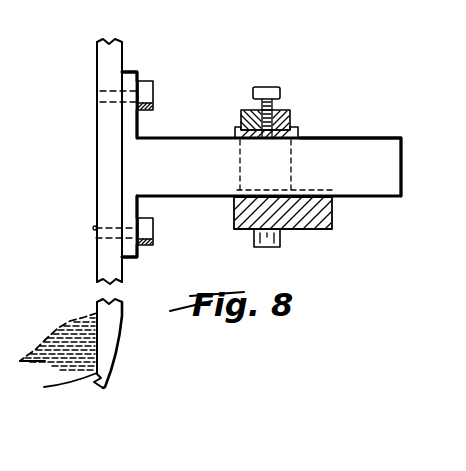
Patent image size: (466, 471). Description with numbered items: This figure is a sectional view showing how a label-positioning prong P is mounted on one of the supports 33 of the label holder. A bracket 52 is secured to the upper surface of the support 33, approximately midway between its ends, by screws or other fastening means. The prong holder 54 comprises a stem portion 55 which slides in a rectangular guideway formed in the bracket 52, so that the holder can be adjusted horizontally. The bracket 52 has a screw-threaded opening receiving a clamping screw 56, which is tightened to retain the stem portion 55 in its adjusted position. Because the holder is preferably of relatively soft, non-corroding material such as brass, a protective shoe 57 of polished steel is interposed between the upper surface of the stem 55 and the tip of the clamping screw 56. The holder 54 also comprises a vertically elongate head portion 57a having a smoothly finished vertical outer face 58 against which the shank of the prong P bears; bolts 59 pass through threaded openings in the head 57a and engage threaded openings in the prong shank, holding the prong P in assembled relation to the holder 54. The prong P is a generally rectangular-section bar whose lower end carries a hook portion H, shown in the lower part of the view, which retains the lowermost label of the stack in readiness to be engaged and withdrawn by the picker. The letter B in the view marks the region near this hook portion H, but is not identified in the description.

The label-positioning prong P is at (107, 68).
The prong holder 54 is at (213, 110).
The head portion 57a is at (132, 73).
The bolts 59 is at (153, 93).
The clamping screw 56 is at (268, 86).
The bracket 52 is at (285, 113).
The protective shoe 57 is at (300, 136).
The stem portion 55 is at (364, 148).
The support 33 is at (333, 215).
The outer face 58 is at (122, 180).
The bracket / lower panel portion B is at (47, 314).
The hook portion H is at (55, 357).